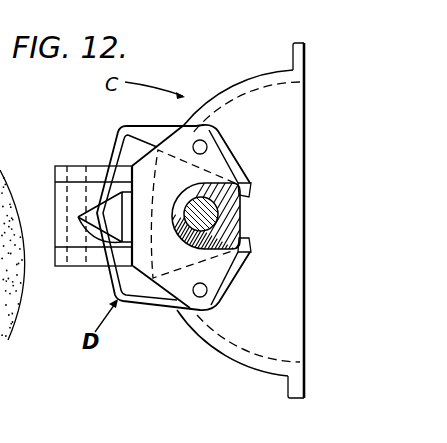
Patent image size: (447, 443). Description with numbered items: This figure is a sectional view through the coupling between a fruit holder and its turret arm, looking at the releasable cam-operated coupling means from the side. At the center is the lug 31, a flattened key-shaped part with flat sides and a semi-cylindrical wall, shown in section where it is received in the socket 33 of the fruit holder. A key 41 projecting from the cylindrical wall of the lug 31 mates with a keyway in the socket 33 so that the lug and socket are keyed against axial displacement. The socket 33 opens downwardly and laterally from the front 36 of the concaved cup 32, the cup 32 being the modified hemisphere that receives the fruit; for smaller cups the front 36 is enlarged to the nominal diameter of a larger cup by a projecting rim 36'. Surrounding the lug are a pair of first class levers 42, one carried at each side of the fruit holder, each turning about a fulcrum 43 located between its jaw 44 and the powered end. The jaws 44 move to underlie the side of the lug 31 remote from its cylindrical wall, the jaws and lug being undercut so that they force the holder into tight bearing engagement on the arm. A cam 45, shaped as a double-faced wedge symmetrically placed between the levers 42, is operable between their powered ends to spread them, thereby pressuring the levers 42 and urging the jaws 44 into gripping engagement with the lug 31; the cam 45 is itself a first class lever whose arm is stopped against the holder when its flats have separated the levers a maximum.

The lug 31 is at (228, 220).
The concaved cup 32 is at (282, 127).
The socket 33 is at (181, 228).
The front of the cup 36 is at (327, 220).
The projecting rim 36' is at (327, 223).
The key 41 is at (158, 200).
The first class levers 42 is at (151, 128).
The fulcrums 43 is at (206, 143).
The jaws 44 is at (251, 184).
The cam 45 is at (57, 198).